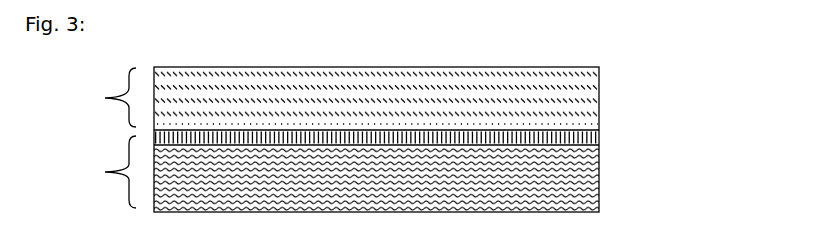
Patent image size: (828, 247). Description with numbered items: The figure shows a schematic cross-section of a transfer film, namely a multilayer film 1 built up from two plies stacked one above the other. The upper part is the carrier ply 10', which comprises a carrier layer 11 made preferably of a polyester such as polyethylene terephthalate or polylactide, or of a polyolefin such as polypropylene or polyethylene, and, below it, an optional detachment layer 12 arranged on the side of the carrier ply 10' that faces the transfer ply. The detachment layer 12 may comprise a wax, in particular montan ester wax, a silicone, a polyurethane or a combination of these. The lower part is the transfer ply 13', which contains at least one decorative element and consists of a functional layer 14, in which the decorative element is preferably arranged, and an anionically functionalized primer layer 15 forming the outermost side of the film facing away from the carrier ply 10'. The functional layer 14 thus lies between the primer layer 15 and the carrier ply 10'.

The multilayer film 1 is at (609, 65).
The carrier ply 10' is at (86, 97).
The carrier layer 11 is at (570, 88).
The detachment layer 12 is at (570, 125).
The transfer ply 13' is at (86, 172).
The functional layer 14 is at (570, 138).
The anionically functionalized primer layer 15 is at (570, 186).